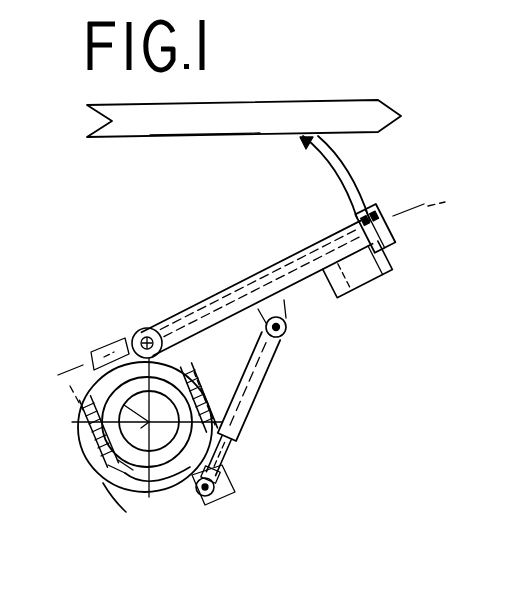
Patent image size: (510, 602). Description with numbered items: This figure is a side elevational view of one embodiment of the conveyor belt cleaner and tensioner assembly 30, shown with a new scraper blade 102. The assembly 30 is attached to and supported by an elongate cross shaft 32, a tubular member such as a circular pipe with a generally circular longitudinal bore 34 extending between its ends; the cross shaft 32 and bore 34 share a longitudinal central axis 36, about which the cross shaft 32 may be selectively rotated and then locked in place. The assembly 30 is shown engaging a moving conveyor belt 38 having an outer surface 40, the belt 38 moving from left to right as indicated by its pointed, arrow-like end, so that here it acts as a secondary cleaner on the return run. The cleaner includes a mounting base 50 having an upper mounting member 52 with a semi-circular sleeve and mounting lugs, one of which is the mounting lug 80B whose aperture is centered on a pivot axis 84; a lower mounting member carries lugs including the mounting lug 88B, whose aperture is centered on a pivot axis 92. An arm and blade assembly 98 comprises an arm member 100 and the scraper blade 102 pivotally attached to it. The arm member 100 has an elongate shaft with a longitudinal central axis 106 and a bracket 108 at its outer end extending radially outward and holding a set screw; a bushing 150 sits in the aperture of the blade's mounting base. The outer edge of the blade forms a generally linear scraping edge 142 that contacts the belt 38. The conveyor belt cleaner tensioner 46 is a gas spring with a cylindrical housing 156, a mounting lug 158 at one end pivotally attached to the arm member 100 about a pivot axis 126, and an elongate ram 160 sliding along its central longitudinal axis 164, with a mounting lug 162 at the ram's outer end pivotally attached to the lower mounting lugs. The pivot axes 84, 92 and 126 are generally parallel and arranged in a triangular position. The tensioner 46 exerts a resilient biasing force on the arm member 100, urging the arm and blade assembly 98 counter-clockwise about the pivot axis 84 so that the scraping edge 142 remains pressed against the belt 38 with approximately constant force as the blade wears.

The conveyor belt cleaner and tensioner assembly 30 is at (342, 400).
The cross shaft 32 is at (160, 466).
The longitudinal bore 34 is at (116, 477).
The longitudinal central axis 36 is at (98, 382).
The conveyor belt 38 is at (287, 122).
The outer surface 40 is at (222, 139).
The conveyor belt cleaner tensioner 46 is at (266, 420).
The mounting base 50 is at (100, 472).
The upper mounting member 52 is at (499, 365).
The mounting lug 80B is at (121, 349).
The pivot axis 84 is at (139, 328).
The mounting lug 88B is at (190, 484).
The pivot axis 92 is at (214, 494).
The arm and blade assembly 98 is at (358, 190).
The arm member 100 is at (262, 266).
The scraper blade 102 is at (338, 172).
The longitudinal central axis 106 is at (446, 209).
The bracket 108 is at (372, 285).
The pivot axis 126 is at (288, 327).
The scraping edge 142 is at (301, 141).
The bushing 150 is at (402, 233).
The housing 156 is at (283, 361).
The mounting lug 158 is at (288, 339).
The ram 160 is at (222, 461).
The mounting lug 162 is at (218, 481).
The central longitudinal axis 164 is at (222, 497).